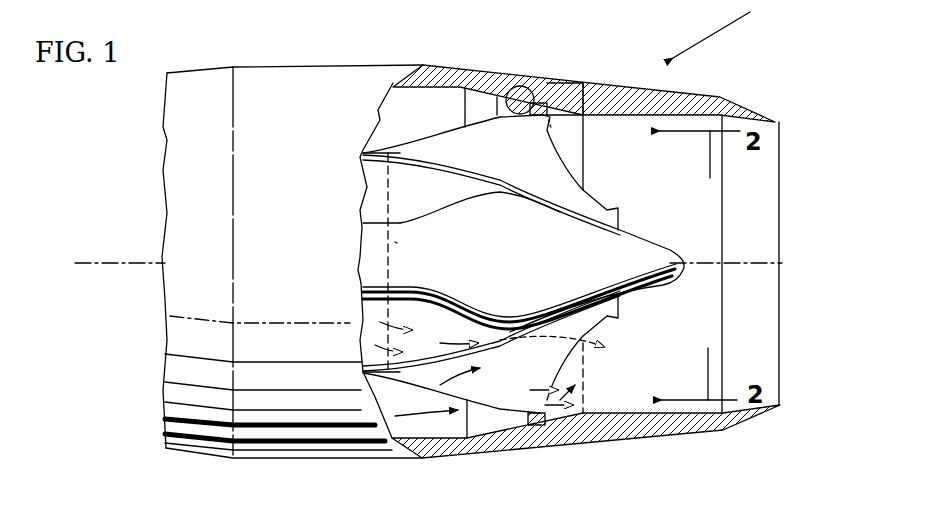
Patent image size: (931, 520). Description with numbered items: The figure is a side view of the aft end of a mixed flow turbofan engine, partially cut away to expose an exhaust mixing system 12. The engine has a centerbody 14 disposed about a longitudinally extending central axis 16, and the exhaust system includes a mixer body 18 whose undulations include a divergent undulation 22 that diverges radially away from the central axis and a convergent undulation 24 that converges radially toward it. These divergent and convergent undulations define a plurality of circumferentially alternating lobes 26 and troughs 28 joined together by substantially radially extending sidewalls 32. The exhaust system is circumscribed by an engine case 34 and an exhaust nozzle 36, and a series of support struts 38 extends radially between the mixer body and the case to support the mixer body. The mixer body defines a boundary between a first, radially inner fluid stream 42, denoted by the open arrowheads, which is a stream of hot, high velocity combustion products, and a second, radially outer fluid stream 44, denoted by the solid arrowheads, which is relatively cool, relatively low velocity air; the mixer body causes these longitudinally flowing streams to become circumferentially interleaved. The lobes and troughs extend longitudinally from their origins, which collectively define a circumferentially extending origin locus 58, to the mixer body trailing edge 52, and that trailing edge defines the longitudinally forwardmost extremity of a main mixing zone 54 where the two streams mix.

The exhaust mixing system 12 is at (727, 29).
The centerbody 14 is at (533, 279).
The central axis 16 is at (790, 262).
The mixer body 18 is at (528, 164).
The divergent undulation 22 is at (496, 85).
The convergent undulation 24 is at (467, 172).
The lobe 26 is at (556, 92).
The trough 28 is at (608, 213).
The sidewall 32 is at (551, 175).
The engine case 34 is at (516, 451).
The exhaust nozzle 36 is at (651, 439).
The support strut 38 is at (507, 86).
The inner fluid stream 42 is at (422, 189).
The outer fluid stream 44 is at (424, 122).
The trailing edge 52 is at (558, 152).
The main mixing zone 54 is at (697, 224).
The origin locus 58 is at (388, 240).